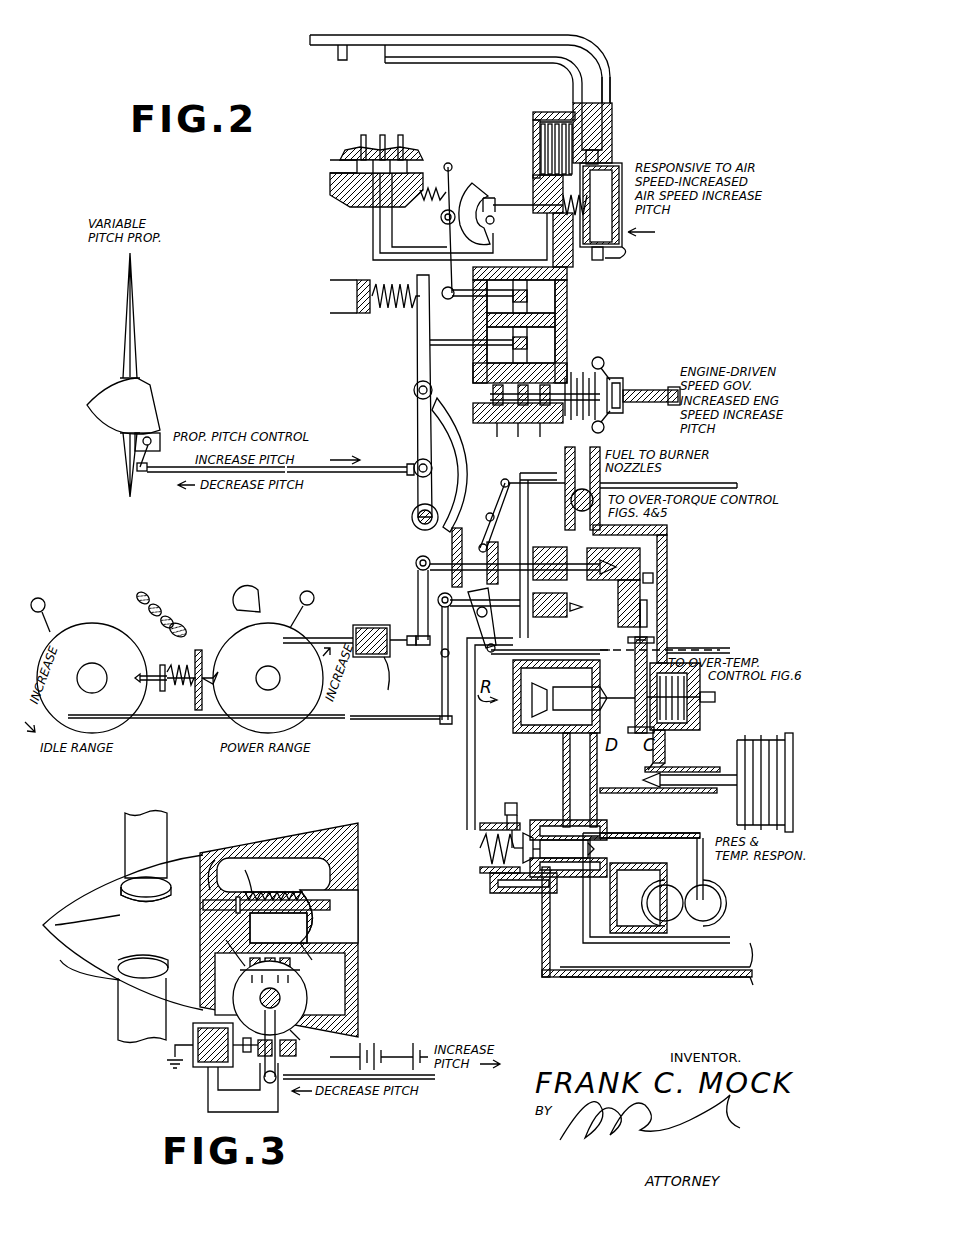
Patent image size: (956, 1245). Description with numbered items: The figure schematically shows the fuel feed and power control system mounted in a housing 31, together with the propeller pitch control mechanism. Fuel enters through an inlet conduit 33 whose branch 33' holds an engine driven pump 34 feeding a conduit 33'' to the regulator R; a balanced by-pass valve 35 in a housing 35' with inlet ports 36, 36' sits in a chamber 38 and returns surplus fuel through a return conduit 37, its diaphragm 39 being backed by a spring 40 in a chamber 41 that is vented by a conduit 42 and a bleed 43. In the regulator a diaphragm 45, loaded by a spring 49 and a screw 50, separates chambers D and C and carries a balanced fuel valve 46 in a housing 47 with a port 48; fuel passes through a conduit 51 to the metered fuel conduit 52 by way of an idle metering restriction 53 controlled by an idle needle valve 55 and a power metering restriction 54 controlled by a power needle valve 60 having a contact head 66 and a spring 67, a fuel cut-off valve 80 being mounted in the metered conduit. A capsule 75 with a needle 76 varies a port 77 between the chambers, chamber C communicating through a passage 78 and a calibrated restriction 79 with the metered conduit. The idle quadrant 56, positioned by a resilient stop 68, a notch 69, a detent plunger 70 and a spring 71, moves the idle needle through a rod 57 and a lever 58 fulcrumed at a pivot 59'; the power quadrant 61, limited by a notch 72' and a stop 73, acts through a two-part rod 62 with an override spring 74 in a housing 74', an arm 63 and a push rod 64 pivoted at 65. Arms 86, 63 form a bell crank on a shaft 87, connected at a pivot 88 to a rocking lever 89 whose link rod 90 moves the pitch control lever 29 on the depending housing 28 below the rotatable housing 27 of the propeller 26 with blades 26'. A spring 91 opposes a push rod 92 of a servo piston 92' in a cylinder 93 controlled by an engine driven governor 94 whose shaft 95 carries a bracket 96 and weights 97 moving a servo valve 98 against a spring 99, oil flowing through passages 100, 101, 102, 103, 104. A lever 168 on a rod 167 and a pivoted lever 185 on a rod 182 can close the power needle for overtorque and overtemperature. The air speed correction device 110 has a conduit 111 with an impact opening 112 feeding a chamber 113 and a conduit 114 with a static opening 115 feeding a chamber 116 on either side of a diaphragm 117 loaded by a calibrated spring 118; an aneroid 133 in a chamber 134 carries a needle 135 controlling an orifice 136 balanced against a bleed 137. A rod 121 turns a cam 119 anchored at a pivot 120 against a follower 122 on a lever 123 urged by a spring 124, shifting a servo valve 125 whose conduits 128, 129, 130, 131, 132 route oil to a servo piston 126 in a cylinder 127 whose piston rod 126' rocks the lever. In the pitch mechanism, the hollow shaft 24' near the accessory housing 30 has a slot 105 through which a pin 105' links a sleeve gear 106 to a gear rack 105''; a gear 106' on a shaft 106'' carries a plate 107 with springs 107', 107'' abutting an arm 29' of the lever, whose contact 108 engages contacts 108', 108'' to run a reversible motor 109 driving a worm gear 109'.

In FIG. 2, the impact opening 112 is at (312, 38).
In FIG. 2, the conduit 114 is at (490, 63).
In FIG. 2, the conduit 111 is at (604, 66).
In FIG. 2, the static opening 115 is at (337, 58).
In FIG. 2, the needle 135 is at (614, 108).
In FIG. 2, the orifice 136 is at (612, 118).
In FIG. 2, the bleed 137 is at (600, 152).
In FIG. 2, the aneroid 133 is at (540, 136).
In FIG. 2, the chamber 134 is at (552, 122).
In FIG. 2, the calibrated spring 118 is at (556, 220).
In FIG. 2, the diaphragm 117 is at (612, 172).
In FIG. 2, the diaphragm chamber 113 is at (630, 250).
In FIG. 2, the diaphragm chamber 116 is at (598, 260).
In FIG. 2, the air speed correction device 110 is at (690, 240).
In FIG. 2, the servo valve 125 is at (355, 167).
In FIG. 2, the conduit 131 is at (362, 136).
In FIG. 2, the conduit 128 is at (383, 135).
In FIG. 2, the conduit 132 is at (403, 136).
In FIG. 2, the conduit 130 is at (372, 219).
In FIG. 2, the conduit 129 is at (378, 200).
In FIG. 2, the lever 123 is at (448, 268).
In FIG. 2, the roller or follower 122 is at (442, 222).
In FIG. 2, the spring 124 is at (440, 188).
In FIG. 2, the cam 119 is at (474, 186).
In FIG. 2, the pivot anchor 120 is at (492, 222).
In FIG. 2, the rod 121 is at (512, 203).
In FIG. 2, the push rod 92 is at (507, 325).
In FIG. 2, the servo piston 126 is at (565, 296).
In FIG. 2, the cylinder 127 is at (555, 300).
In FIG. 2, the servo piston 92' is at (561, 336).
In FIG. 2, the piston cylinder 93 is at (555, 340).
In FIG. 2, the piston rod 126' is at (476, 304).
In FIG. 2, the passage 102 is at (498, 335).
In FIG. 2, the spring 91 is at (388, 310).
In FIG. 2, the servo valve 98 is at (492, 393).
In FIG. 2, the passage 100 is at (512, 425).
In FIG. 2, the passage 103 is at (496, 426).
In FIG. 2, the passage 104 is at (543, 428).
In FIG. 2, the passage 101 is at (573, 372).
In FIG. 2, the bracket 96 is at (625, 380).
In FIG. 2, the spring 99 is at (600, 358).
In FIG. 2, the engine driven speed governor 94 is at (606, 428).
In FIG. 2, the shaft 95 is at (640, 405).
In FIG. 2, the governor weights 97 is at (672, 388).
In FIG. 2, the rocking lever 89 is at (418, 420).
In FIG. 2, the pivot 88 is at (413, 390).
In FIG. 2, the link rod 90 is at (390, 465).
In FIG. 3, the link rod 90 is at (292, 1076).
In FIG. 2, the arm 86 is at (447, 490).
In FIG. 2, the shaft 87 is at (412, 517).
In FIG. 2, the pivot 65 is at (416, 560).
In FIG. 2, the push rod 64 is at (448, 574).
In FIG. 2, the arm 63 is at (416, 604).
In FIG. 2, the fulcrum 59' is at (461, 631).
In FIG. 2, the lever 58 is at (440, 695).
In FIG. 2, the pivoted lever 185 is at (488, 612).
In FIG. 2, the lever 168 is at (490, 517).
In FIG. 2, the contact head 66 is at (496, 540).
In FIG. 2, the spring 67 is at (500, 545).
In FIG. 2, the variable pitch propeller blades 26' is at (104, 375).
In FIG. 3, the variable pitch propeller blades 26' is at (116, 929).
In FIG. 2, the propeller 26 is at (102, 397).
In FIG. 3, the propeller 26 is at (106, 883).
In FIG. 2, the rotatable housing 27 is at (90, 412).
In FIG. 3, the rotatable housing 27 is at (95, 940).
In FIG. 2, the depending housing 28 is at (155, 437).
In FIG. 2, the pitch control lever 29 is at (178, 462).
In FIG. 3, the pitch control lever 29 is at (249, 1048).
In FIG. 2, the fuel cut-off valve 80 is at (565, 470).
In FIG. 2, the rod 167 is at (740, 484).
In FIG. 2, the housing 31 is at (668, 530).
In FIG. 2, the power metering restriction 54 is at (668, 560).
In FIG. 2, the power needle valve 60 is at (580, 558).
In FIG. 2, the metered fuel conduit 52 is at (570, 546).
In FIG. 2, the idle metering restriction 53 is at (640, 600).
In FIG. 2, the calibrated restriction 79 is at (654, 576).
In FIG. 2, the passage 78 is at (648, 612).
In FIG. 2, the diaphragm 45 is at (650, 632).
In FIG. 2, the rod 182 is at (718, 648).
In FIG. 2, the idle needle valve 55 is at (556, 658).
In FIG. 2, the conduit 51 is at (612, 640).
In FIG. 2, the housing 47 is at (540, 715).
In FIG. 2, the balanced fuel valve 46 is at (582, 712).
In FIG. 2, the port 48 is at (634, 700).
In FIG. 2, the spring 49 is at (690, 718).
In FIG. 2, the screw 50 is at (716, 698).
In FIG. 2, the conduit 42 is at (466, 803).
In FIG. 2, the conduit 33'' is at (563, 780).
In FIG. 2, the port 77 is at (650, 788).
In FIG. 2, the needle 76 is at (690, 788).
In FIG. 2, the capsule 75 is at (737, 812).
In FIG. 2, the valve housing 35' is at (651, 853).
In FIG. 2, the spring 40 is at (478, 845).
In FIG. 2, the chamber 41 is at (478, 870).
In FIG. 2, the bleed 43 is at (505, 803).
In FIG. 2, the chamber 38 is at (512, 812).
In FIG. 2, the fuel inlet port 36 is at (539, 818).
In FIG. 2, the fuel inlet port 36' is at (589, 848).
In FIG. 2, the balanced by-pass valve 35 is at (563, 866).
In FIG. 2, the diaphragm 39 is at (492, 890).
In FIG. 2, the return conduit 37 is at (541, 915).
In FIG. 2, the branch conduit 33' is at (656, 888).
In FIG. 2, the engine driven pump 34 is at (722, 905).
In FIG. 2, the fuel inlet conduit 33 is at (656, 971).
In FIG. 2, the idle quadrant 56 is at (90, 636).
In FIG. 2, the notch 69 is at (148, 680).
In FIG. 2, the detent plunger 70 is at (162, 665).
In FIG. 2, the spring 71 is at (180, 665).
In FIG. 2, the notch 72' is at (223, 680).
In FIG. 2, the power quadrant 61 is at (262, 636).
In FIG. 2, the rod 62 is at (336, 636).
In FIG. 2, the override spring 74 is at (384, 657).
In FIG. 2, the housing 74' is at (385, 683).
In FIG. 2, the rod 57 is at (388, 720).
In FIG. 2, the resilient stop 68 is at (143, 592).
In FIG. 2, the stop 73 is at (254, 592).
In FIG. 3, the accessory housing 30 is at (330, 822).
In FIG. 3, the arm 29' is at (282, 880).
In FIG. 3, the hollow shaft 24' is at (349, 902).
In FIG. 3, the elongated slot 105 is at (266, 858).
In FIG. 3, the pin 105' is at (196, 861).
In FIG. 3, the sleeve gear 106 is at (273, 848).
In FIG. 3, the propeller pitch gear rack 105'' is at (278, 928).
In FIG. 3, the spring 107' is at (203, 942).
In FIG. 3, the spring 107'' is at (361, 937).
In FIG. 3, the gear 106' is at (334, 953).
In FIG. 3, the disc shaped plate 107 is at (338, 969).
In FIG. 3, the shaft 106'' is at (350, 980).
In FIG. 3, the contact 108 is at (238, 998).
In FIG. 3, the contact 108' is at (353, 1021).
In FIG. 3, the contact 108'' is at (232, 1030).
In FIG. 3, the worm gear 109' is at (285, 1044).
In FIG. 3, the reversible motor 109 is at (219, 1067).